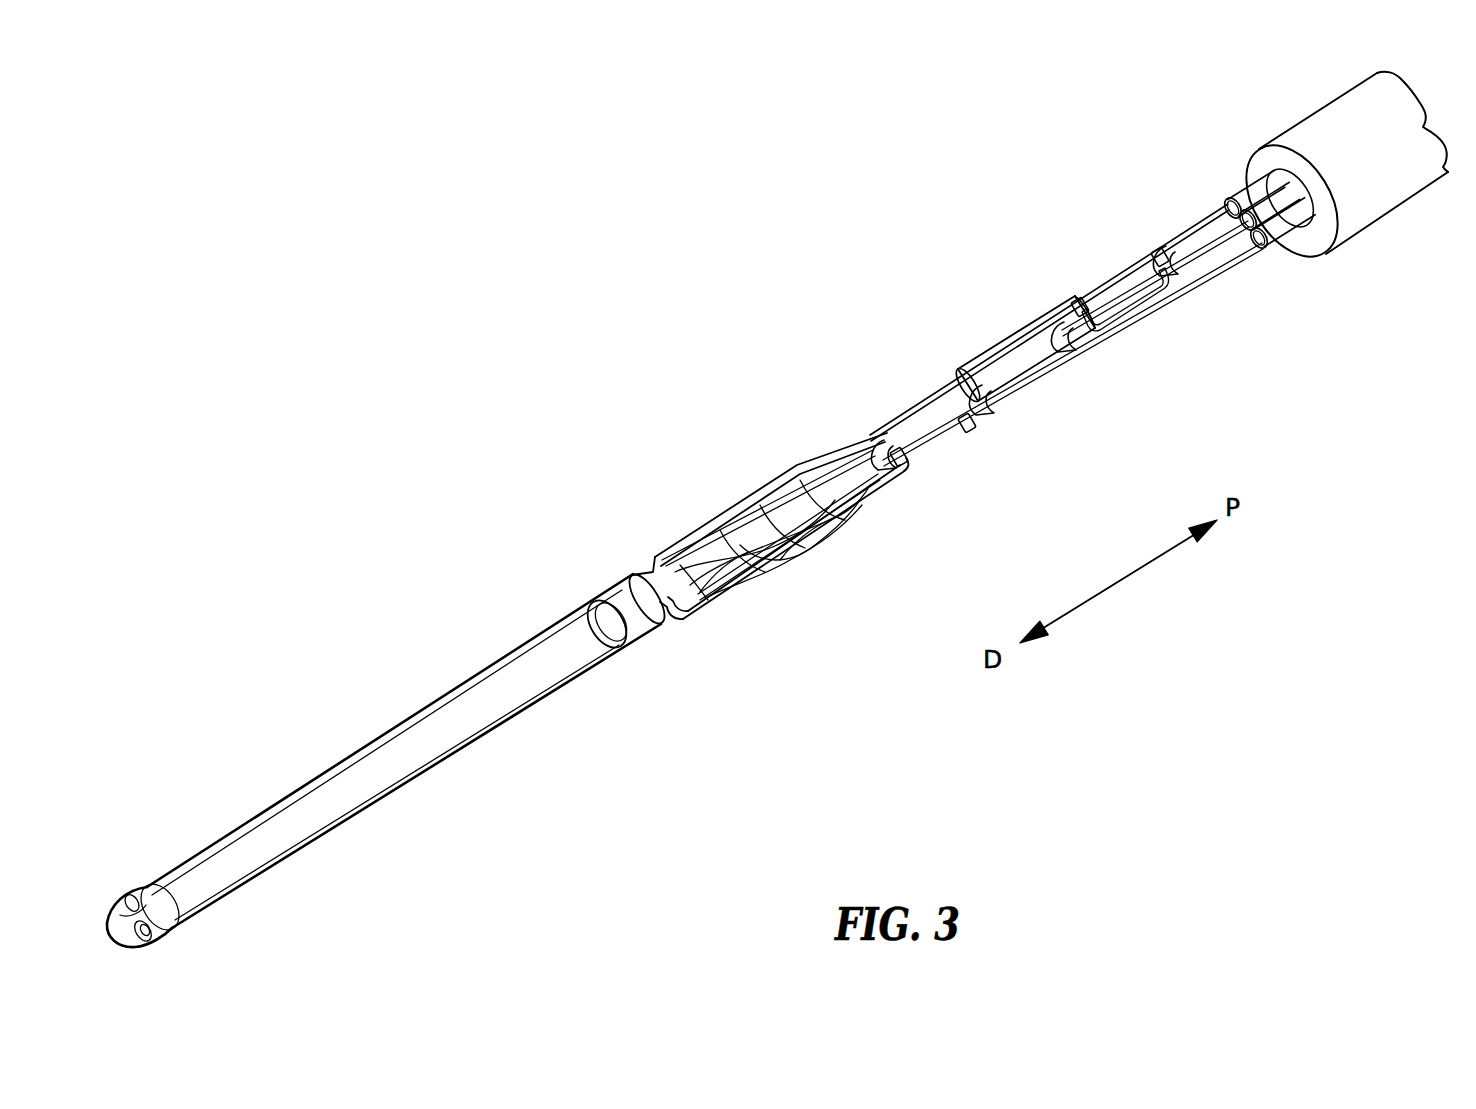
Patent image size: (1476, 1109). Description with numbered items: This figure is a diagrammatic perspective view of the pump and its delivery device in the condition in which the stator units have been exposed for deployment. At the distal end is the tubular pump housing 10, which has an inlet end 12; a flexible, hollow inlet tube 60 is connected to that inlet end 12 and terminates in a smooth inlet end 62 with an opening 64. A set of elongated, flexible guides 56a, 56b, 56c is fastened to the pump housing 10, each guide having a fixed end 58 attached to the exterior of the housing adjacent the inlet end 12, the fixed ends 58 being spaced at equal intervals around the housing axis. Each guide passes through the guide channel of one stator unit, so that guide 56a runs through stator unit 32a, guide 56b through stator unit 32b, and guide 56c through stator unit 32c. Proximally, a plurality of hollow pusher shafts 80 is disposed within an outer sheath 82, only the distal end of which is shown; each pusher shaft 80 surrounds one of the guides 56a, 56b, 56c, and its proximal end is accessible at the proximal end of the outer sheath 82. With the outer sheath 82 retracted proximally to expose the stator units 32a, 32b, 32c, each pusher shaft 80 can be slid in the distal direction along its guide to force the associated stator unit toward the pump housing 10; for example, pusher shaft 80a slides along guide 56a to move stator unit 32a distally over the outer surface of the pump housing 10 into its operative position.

The pump housing 10 is at (728, 545).
The inlet end 12 is at (655, 566).
The stator unit 32a is at (923, 430).
The stator unit 32b is at (1017, 333).
The stator unit 32c is at (1107, 283).
The guide 56a is at (787, 578).
The guide 56b is at (884, 464).
The guide 56c is at (851, 450).
The fixed end 58 is at (669, 622).
The inlet tube 60 is at (453, 728).
The inlet end 62 is at (140, 890).
The opening 64 is at (150, 938).
The pusher shaft 80 is at (1280, 200).
The pusher shaft 80a is at (1290, 227).
The outer sheath 82 is at (1395, 187).